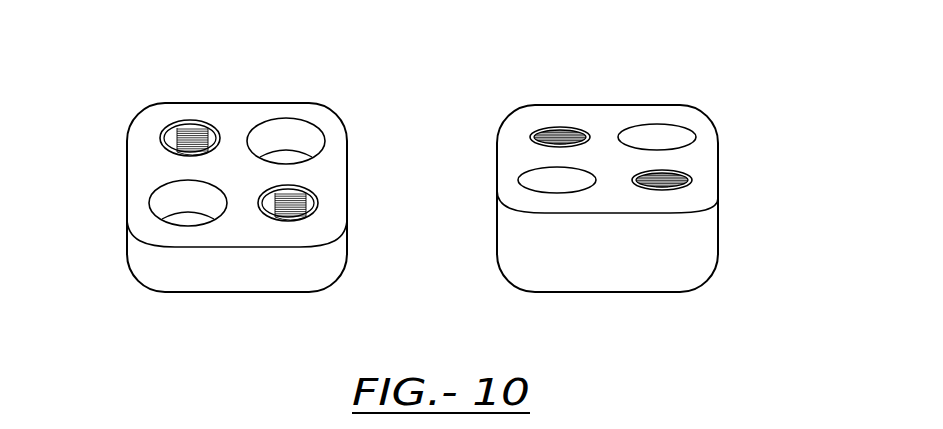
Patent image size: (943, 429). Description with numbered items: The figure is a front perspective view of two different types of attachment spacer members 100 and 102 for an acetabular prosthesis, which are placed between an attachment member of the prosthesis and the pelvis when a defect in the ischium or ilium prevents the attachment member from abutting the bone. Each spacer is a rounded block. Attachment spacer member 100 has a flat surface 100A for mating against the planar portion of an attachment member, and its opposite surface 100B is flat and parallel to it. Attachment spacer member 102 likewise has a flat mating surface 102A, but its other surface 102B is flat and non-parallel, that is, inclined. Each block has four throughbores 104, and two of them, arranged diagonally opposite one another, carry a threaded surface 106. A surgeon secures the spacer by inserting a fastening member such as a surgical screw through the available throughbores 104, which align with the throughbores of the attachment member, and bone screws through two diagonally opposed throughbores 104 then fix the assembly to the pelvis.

The attachment spacer member 100 is at (247, 60).
The flat surface 100A is at (297, 175).
The flat and parallel surface 100B is at (292, 272).
The attachment spacer member 102 is at (612, 61).
The flat surface 102A is at (673, 160).
The flat and non-parallel surface 102B is at (657, 272).
The throughbore 104 is at (213, 127).
The threaded surface 106 is at (197, 134).